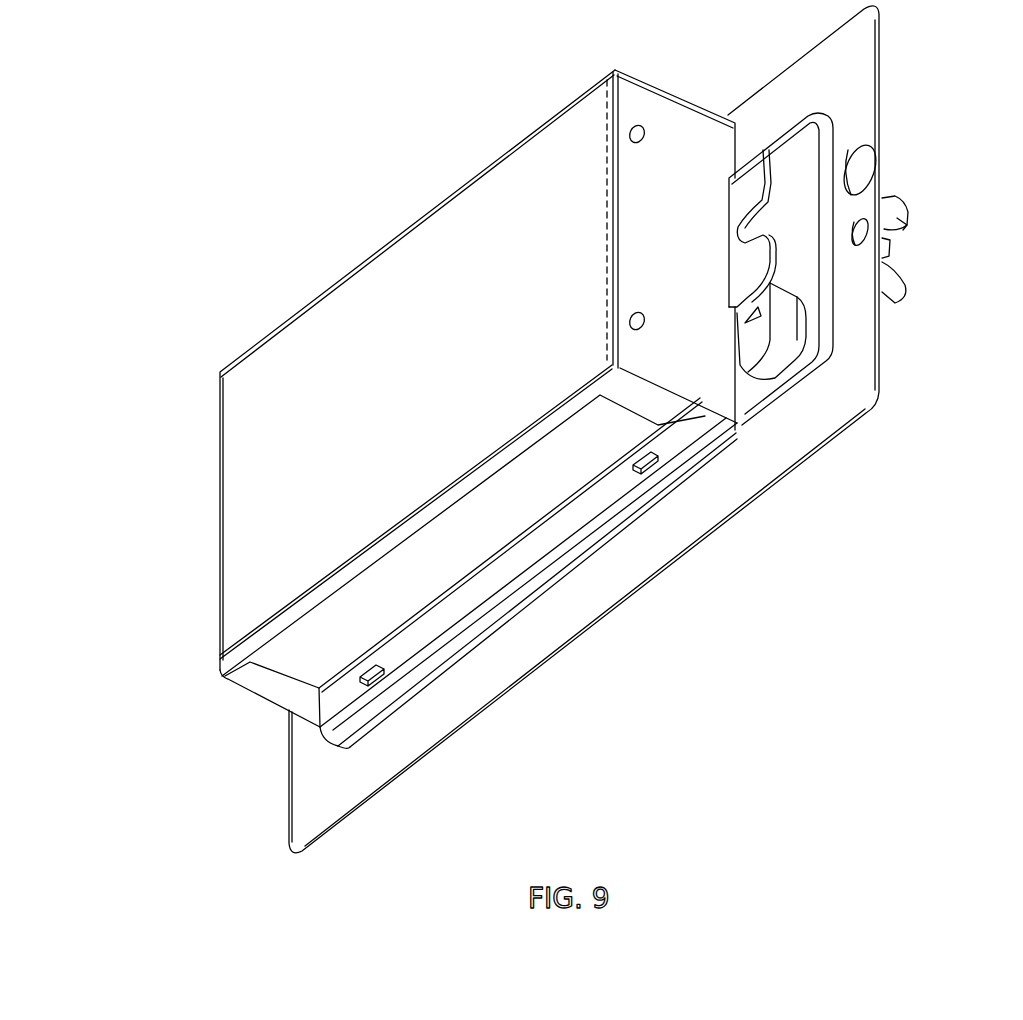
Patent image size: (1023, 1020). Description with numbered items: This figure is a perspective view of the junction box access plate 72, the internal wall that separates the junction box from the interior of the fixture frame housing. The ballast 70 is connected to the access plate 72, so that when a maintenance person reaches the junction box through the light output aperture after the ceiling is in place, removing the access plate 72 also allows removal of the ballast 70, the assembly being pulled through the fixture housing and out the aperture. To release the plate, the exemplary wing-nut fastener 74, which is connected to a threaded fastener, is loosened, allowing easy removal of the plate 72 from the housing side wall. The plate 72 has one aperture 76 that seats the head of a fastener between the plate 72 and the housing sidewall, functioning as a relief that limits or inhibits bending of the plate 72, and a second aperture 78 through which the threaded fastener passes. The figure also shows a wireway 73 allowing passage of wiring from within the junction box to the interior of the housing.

The ballast 70 is at (422, 246).
The access plate 72 is at (913, 83).
The wireway 73 is at (778, 346).
The fastener 74 is at (900, 287).
The aperture 76 is at (868, 145).
The second aperture 78 is at (863, 216).